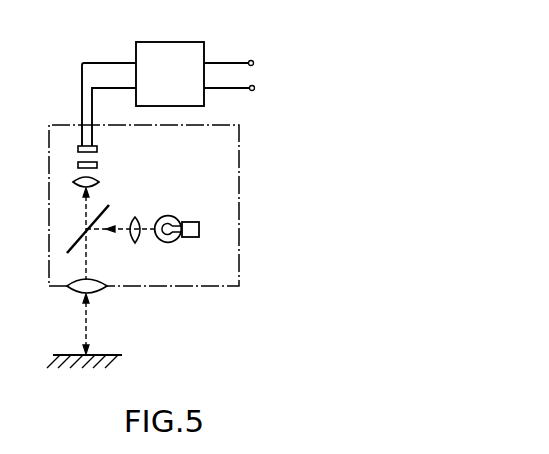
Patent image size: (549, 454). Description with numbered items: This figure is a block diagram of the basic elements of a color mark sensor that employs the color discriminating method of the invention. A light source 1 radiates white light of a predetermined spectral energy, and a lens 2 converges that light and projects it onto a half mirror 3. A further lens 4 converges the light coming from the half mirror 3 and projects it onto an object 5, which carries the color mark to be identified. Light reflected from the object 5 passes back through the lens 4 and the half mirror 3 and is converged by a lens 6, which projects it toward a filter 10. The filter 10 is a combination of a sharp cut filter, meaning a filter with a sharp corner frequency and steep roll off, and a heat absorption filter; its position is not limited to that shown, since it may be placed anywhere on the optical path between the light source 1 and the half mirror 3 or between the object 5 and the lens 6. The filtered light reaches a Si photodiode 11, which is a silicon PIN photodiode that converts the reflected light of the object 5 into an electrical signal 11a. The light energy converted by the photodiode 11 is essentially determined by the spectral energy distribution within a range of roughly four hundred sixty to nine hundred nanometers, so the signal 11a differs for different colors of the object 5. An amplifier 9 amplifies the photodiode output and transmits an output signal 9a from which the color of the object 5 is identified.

The light source 1 is at (190, 238).
The lens 2 is at (135, 243).
The half mirror 3 is at (87, 226).
The lens 4 is at (75, 289).
The object 5 is at (60, 355).
The lens 6 is at (80, 184).
The amplifier 9 is at (187, 55).
The output signal 9a is at (237, 63).
The filter 10 is at (77, 164).
The Si photodiode 11 is at (77, 147).
The output signal 11a is at (82, 78).